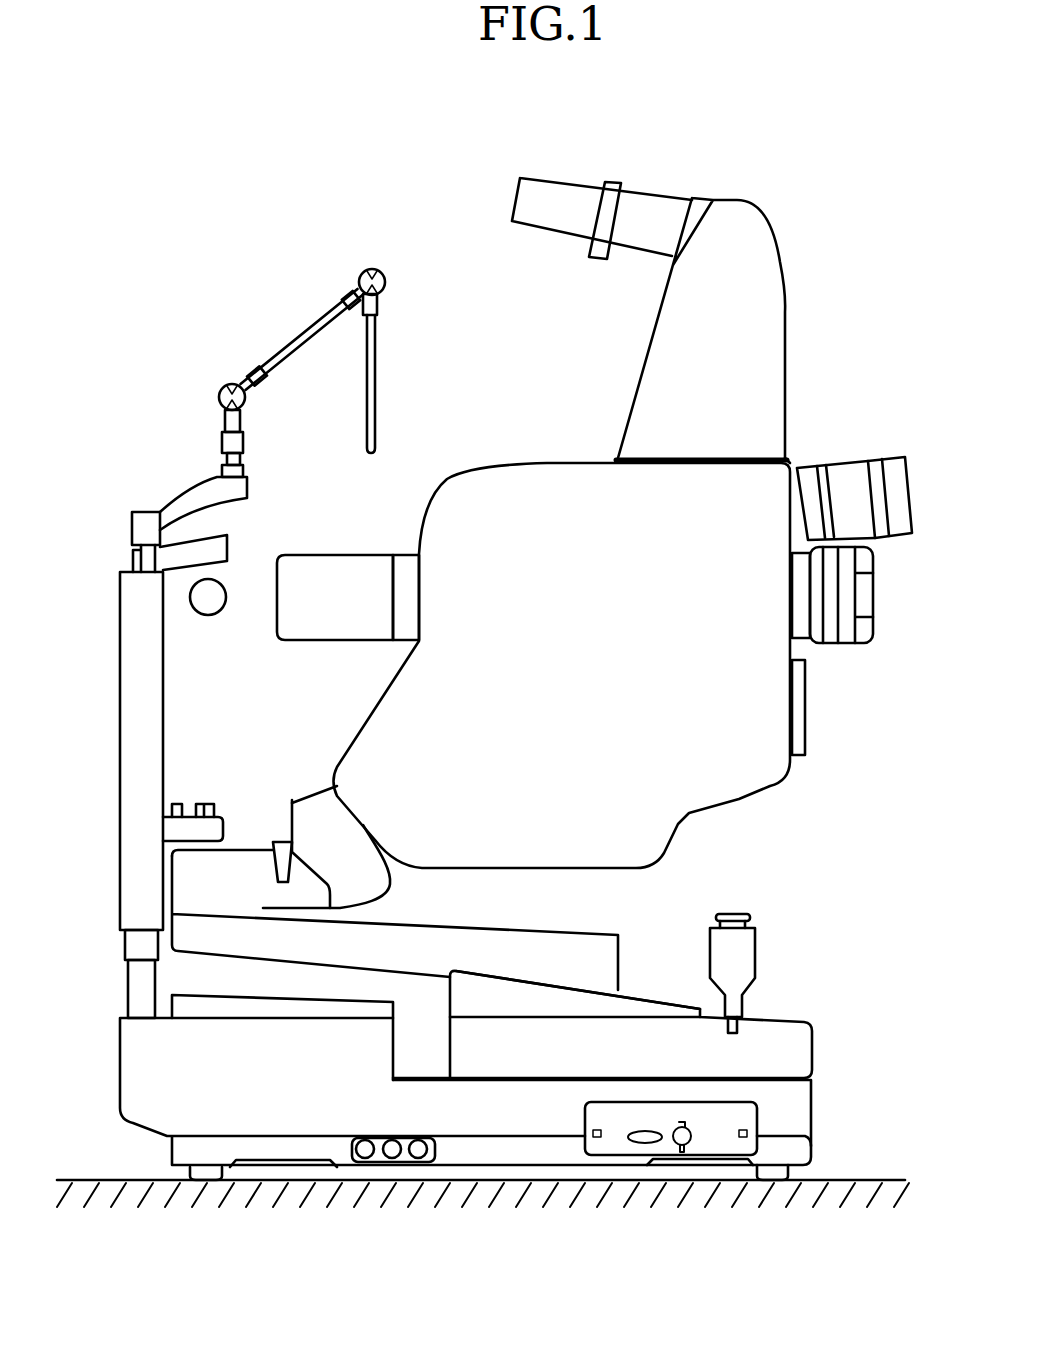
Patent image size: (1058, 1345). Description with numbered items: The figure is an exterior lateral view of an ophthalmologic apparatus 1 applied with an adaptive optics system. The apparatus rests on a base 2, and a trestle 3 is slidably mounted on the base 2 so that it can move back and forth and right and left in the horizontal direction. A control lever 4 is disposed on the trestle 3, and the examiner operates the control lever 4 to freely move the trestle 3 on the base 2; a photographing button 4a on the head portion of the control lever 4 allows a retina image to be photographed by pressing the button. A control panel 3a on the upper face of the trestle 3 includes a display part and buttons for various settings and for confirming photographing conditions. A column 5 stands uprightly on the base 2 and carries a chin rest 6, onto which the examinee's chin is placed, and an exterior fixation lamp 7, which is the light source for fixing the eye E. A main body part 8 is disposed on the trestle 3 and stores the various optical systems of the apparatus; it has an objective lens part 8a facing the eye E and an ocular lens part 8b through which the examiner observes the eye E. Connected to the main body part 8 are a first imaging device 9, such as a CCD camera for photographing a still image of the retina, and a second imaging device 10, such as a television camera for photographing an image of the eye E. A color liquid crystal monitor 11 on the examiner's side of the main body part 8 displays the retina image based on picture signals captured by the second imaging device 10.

The ophthalmologic apparatus 1 is at (853, 296).
The base 2 is at (530, 1127).
The trestle 3 is at (526, 967).
The control panel 3a is at (665, 994).
The control lever 4 is at (774, 948).
The photographing button 4a is at (738, 913).
The column 5 is at (156, 731).
The chin rest 6 is at (208, 806).
The exterior fixation lamp 7 is at (378, 415).
The main body part 8 is at (611, 486).
The objective lens part 8a is at (343, 553).
The ocular lens part 8b is at (877, 460).
The first imaging device 9 is at (873, 590).
The second imaging device 10 is at (655, 192).
The color liquid crystal monitor 11 is at (799, 690).
The eye E is at (224, 585).